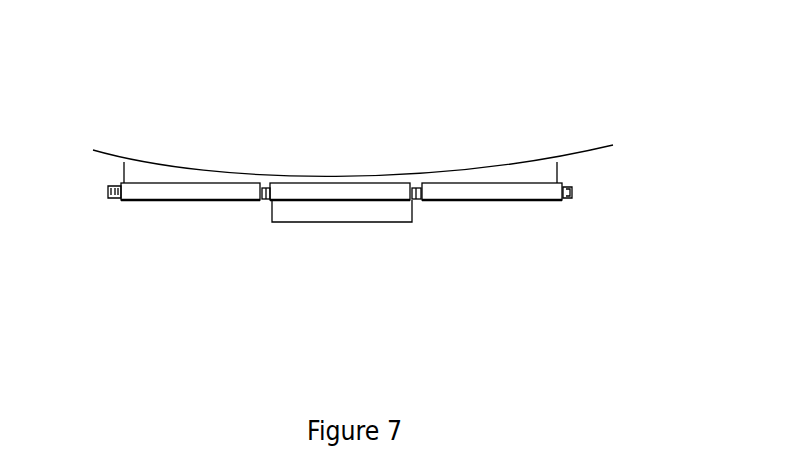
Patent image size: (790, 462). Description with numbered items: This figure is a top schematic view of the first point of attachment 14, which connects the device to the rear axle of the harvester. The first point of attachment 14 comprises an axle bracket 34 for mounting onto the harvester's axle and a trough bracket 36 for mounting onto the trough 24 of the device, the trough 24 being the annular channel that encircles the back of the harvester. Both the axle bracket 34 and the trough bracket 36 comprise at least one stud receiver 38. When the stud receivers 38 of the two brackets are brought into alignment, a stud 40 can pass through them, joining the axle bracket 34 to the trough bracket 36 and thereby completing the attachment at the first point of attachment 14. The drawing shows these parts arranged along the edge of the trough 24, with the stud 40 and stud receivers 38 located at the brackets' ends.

The first point of attachment 14 is at (478, 94).
The trough 24 is at (346, 165).
The axle bracket 34 is at (337, 213).
The trough bracket 36 is at (547, 175).
The stud receiver 38 is at (284, 196).
The stud 40 is at (114, 200).